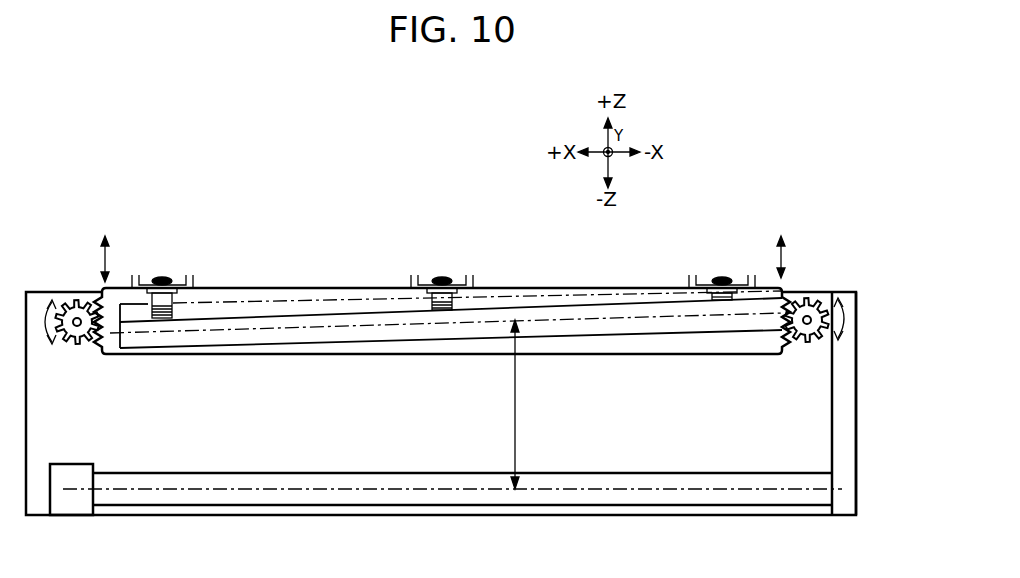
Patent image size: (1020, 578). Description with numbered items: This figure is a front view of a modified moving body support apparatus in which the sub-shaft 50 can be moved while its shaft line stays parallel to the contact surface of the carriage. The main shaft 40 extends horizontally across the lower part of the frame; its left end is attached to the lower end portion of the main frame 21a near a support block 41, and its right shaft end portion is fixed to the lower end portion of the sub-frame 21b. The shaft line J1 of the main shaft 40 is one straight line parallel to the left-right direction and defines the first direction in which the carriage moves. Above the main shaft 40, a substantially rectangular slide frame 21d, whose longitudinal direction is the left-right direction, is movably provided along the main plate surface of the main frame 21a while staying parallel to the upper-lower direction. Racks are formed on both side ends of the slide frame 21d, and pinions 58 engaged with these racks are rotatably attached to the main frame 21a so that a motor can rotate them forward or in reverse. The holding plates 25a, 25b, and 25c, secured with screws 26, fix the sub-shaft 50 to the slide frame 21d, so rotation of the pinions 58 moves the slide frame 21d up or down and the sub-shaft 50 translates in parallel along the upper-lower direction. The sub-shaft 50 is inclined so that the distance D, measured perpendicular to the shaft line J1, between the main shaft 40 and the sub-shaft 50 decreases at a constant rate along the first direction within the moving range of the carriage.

The main frame 21a is at (815, 368).
The sub-frame 21b is at (842, 423).
The slide frame 21d is at (700, 352).
The holding plate 25a is at (694, 280).
The holding plate 25b is at (192, 276).
The holding plate 25c is at (474, 276).
The screw 26 is at (160, 277).
The main shaft 40 is at (275, 476).
The bearing block 41 is at (70, 470).
The sub-shaft 50 is at (312, 328).
The pinion 58 is at (76, 346).
The shaft line J1 is at (166, 486).
The distance D is at (524, 404).